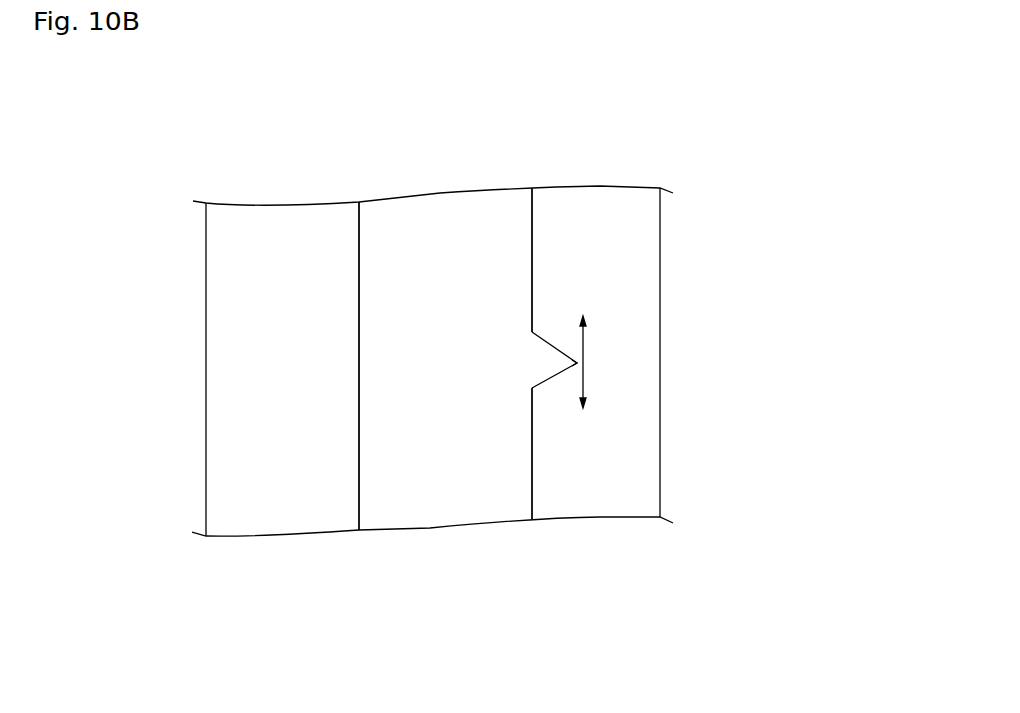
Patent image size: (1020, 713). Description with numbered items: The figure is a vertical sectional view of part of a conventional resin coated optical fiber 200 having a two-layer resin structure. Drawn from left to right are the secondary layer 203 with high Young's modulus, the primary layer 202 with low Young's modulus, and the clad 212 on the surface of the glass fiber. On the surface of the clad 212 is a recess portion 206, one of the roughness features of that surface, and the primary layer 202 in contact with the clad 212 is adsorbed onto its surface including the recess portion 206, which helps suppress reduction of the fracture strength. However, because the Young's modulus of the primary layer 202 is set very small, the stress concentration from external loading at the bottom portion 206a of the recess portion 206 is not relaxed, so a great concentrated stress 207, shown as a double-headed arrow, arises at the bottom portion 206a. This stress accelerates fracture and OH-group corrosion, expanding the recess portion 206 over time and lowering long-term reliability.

The resin coated optical fiber 200 is at (660, 112).
The primary layer 202 is at (463, 503).
The secondary layer 203 is at (283, 505).
The clad 212 is at (588, 503).
The recess portion 206 is at (552, 345).
The bottom portion 206a is at (578, 318).
The stress 207 is at (580, 363).